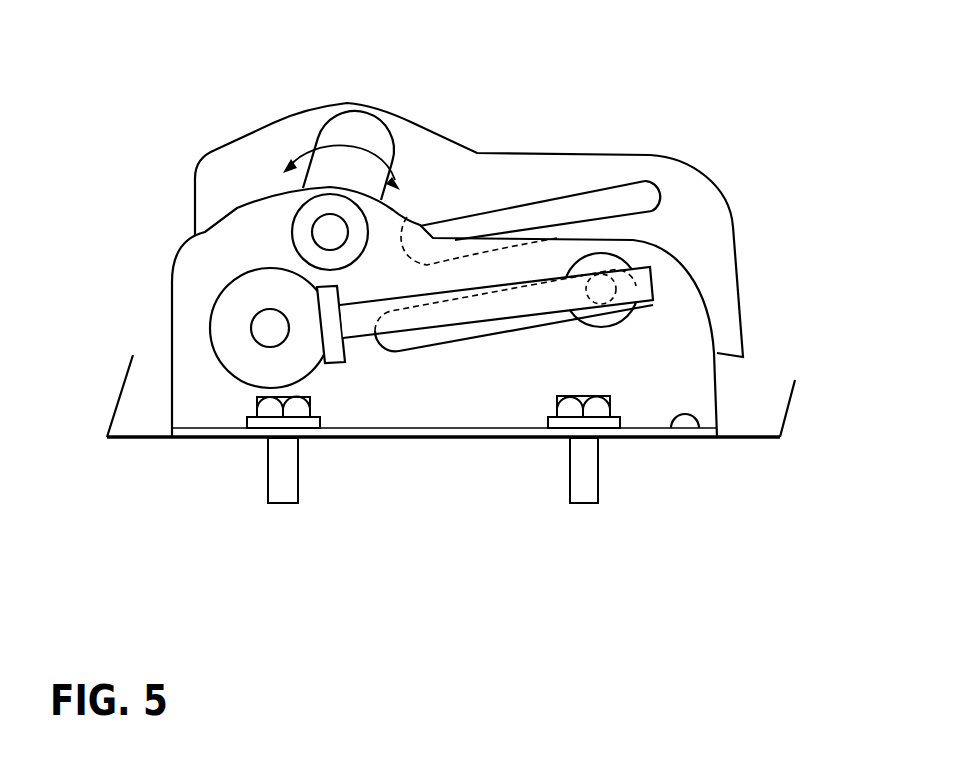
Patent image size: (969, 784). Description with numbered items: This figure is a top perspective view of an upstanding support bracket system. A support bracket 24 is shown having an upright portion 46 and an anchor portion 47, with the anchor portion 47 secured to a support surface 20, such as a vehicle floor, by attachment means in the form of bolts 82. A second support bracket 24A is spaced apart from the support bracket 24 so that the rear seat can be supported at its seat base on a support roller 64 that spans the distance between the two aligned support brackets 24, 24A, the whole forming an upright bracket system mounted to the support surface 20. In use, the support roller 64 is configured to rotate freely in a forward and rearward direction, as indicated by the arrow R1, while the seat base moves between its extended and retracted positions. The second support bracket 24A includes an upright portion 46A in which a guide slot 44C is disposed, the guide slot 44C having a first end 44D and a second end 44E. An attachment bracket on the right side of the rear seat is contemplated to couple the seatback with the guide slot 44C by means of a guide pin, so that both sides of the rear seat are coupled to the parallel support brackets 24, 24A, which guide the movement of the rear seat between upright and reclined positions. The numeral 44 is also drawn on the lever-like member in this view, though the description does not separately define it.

The support surface 20 is at (760, 428).
The support bracket 24 is at (153, 317).
The second support bracket 24A is at (176, 222).
The lever 44 is at (431, 343).
The guide slot 44C is at (543, 200).
The first end 44D is at (660, 190).
The second end 44E is at (407, 220).
The upright portion 46 is at (697, 382).
The upright portion 46A is at (708, 223).
The anchor portion 47 is at (697, 431).
The support roller 64 is at (337, 137).
The bolts 82 is at (293, 473).
The arrow R1 is at (355, 153).